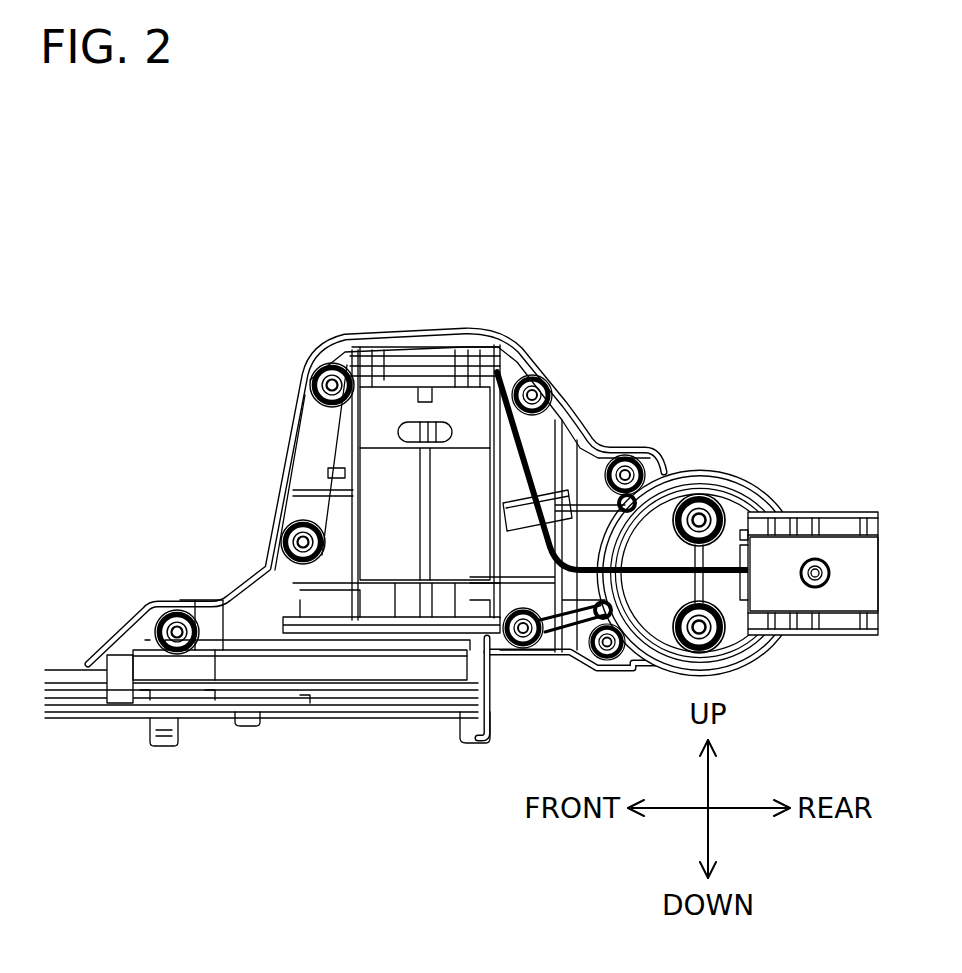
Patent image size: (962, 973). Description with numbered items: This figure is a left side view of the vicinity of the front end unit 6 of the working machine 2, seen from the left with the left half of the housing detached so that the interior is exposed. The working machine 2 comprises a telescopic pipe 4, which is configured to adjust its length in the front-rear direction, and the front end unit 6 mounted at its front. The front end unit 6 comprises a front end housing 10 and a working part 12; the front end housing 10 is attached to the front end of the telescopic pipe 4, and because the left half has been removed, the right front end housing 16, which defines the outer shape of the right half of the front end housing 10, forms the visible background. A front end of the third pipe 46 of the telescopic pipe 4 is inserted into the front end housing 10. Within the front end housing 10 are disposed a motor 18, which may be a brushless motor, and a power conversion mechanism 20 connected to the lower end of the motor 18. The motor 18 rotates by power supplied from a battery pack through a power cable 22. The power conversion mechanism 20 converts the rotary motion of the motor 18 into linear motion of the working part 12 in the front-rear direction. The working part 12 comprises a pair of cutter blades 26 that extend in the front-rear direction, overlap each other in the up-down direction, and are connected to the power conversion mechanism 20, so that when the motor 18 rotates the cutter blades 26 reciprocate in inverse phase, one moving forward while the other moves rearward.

The working machine 2 is at (695, 347).
The telescopic pipe 4 is at (830, 517).
The front end unit 6 is at (205, 435).
The front end housing 10 is at (462, 332).
The working part 12 is at (62, 645).
The right front end housing 16 is at (533, 362).
The motor 18 is at (408, 405).
The power conversion mechanism 20 is at (348, 672).
The power cable 22 is at (600, 462).
The cutter blades 26 is at (90, 694).
The third pipe 46 is at (805, 603).